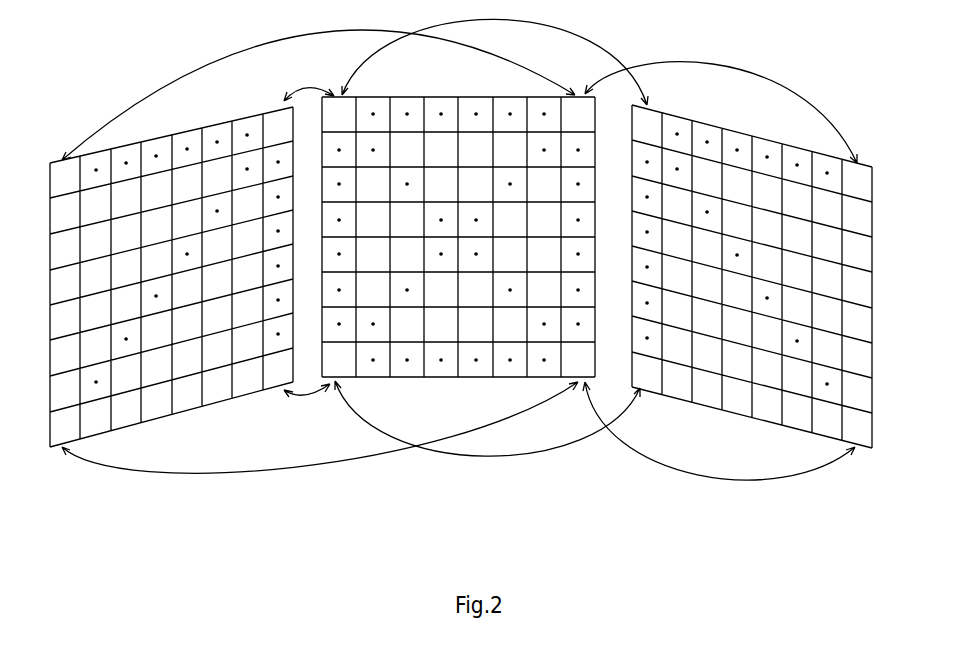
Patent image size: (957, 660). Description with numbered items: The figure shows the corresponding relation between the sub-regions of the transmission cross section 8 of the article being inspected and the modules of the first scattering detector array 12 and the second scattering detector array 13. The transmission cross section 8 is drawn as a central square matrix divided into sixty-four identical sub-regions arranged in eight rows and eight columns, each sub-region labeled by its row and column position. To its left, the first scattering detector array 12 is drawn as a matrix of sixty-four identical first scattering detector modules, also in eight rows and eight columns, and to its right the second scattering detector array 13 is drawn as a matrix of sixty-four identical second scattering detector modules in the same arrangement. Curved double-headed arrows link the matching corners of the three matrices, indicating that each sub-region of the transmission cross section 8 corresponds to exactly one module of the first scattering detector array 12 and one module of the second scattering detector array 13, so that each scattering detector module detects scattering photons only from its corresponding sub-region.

The transmission cross section 8 is at (447, 410).
The first scattering detector array 12 is at (230, 438).
The second scattering detector array 13 is at (722, 445).